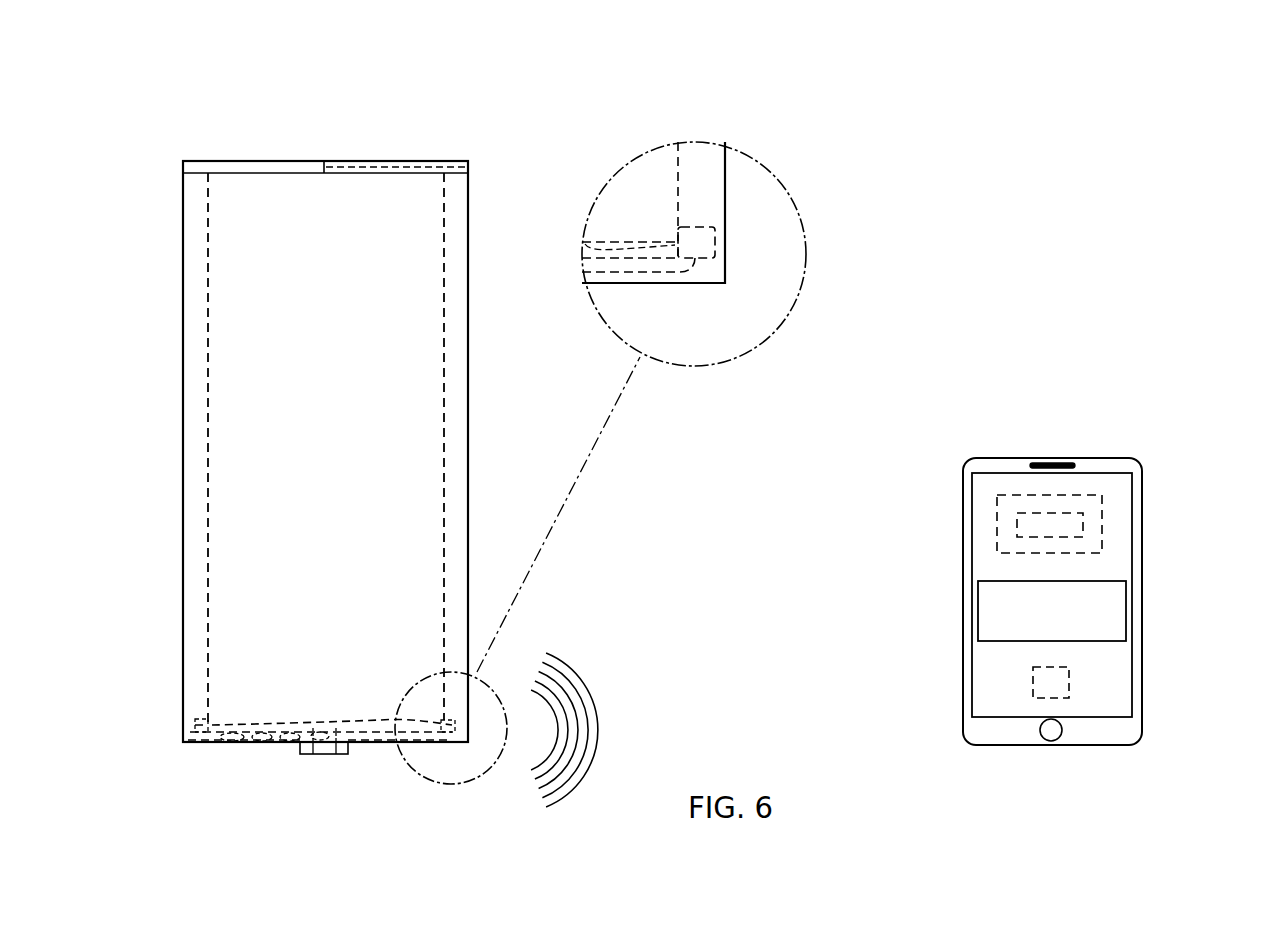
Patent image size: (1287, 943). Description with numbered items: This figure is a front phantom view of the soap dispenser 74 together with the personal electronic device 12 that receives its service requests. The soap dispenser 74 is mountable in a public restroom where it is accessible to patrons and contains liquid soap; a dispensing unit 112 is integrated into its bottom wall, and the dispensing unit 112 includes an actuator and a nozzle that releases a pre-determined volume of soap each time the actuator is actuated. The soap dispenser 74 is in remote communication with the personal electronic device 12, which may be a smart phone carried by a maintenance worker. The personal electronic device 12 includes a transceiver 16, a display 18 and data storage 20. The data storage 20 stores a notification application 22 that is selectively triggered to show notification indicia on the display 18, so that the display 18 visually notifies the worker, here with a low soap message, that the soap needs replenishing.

The soap dispenser 74 is at (478, 170).
The dispensing unit 112 is at (330, 757).
The personal electronic device 12 is at (1133, 458).
The display 18 is at (972, 541).
The data storage 20 is at (1023, 497).
The notification application 22 is at (1083, 517).
The transceiver 16 is at (1033, 690).